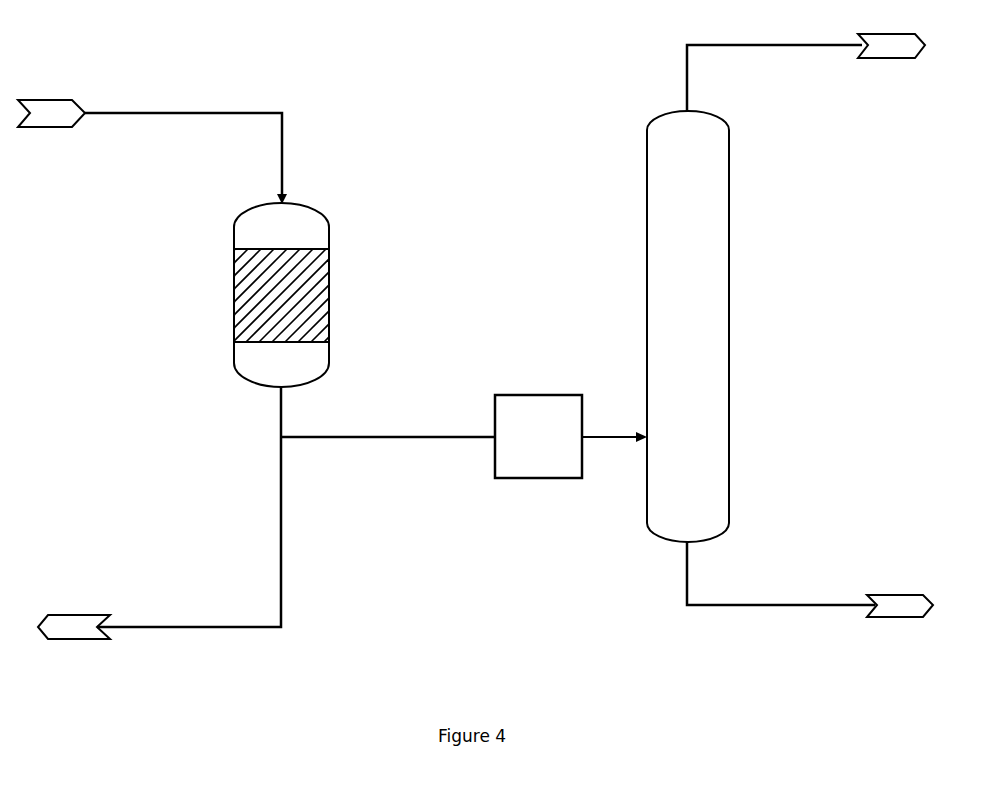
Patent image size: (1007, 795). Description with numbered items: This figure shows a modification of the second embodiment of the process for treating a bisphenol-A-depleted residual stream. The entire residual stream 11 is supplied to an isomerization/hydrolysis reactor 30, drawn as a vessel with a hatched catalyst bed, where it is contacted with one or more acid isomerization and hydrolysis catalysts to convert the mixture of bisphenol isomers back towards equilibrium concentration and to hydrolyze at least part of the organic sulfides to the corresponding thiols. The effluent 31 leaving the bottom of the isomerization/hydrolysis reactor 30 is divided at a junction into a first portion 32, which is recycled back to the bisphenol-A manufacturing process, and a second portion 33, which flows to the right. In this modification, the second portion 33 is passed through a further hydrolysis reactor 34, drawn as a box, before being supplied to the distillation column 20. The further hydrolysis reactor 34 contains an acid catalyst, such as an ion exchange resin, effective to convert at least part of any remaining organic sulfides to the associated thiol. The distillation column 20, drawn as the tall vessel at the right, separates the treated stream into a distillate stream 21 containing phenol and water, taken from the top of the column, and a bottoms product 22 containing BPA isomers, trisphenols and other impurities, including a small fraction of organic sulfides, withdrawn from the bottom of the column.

The residual stream 11 is at (152, 145).
The distillation column 20 is at (706, 326).
The distillate stream 21 is at (806, 68).
The bottoms product 22 is at (810, 579).
The isomerization/hydrolysis reactor 30 is at (279, 295).
The effluent 31 is at (278, 412).
The first portion 32 is at (280, 523).
The second portion 33 is at (413, 433).
The further hydrolysis reactor 34 is at (538, 478).